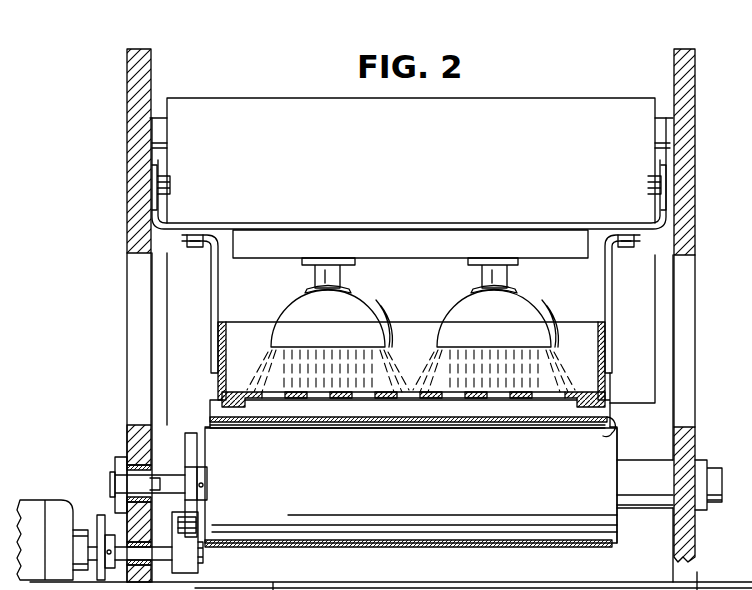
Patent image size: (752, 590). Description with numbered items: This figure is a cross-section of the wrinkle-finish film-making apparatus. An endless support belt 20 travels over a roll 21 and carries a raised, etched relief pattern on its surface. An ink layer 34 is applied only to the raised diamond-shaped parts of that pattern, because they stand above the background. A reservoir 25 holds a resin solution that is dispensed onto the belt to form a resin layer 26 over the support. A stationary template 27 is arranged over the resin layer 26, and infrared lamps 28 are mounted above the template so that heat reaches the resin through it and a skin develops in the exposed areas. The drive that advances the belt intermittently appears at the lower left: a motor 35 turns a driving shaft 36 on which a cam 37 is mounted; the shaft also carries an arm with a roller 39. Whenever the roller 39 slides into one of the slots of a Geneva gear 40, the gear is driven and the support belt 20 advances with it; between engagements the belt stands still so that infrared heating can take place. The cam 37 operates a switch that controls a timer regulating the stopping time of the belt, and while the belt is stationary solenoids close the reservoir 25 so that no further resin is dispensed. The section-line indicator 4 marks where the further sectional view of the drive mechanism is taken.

The section line 4- 4 is at (159, 110).
The endless support belt 20 is at (615, 433).
The roll 21 is at (500, 517).
The resin reservoir 25 is at (520, 105).
The resin layer 26 is at (408, 418).
The stationary template 27 is at (206, 390).
The infrared lamps 28 is at (463, 318).
The ink layer 34 is at (608, 423).
The motor 35 is at (53, 515).
The driving shaft 36 is at (200, 562).
The cam 37 is at (100, 527).
The roller 39 is at (188, 523).
The Geneva gear 40 is at (190, 452).